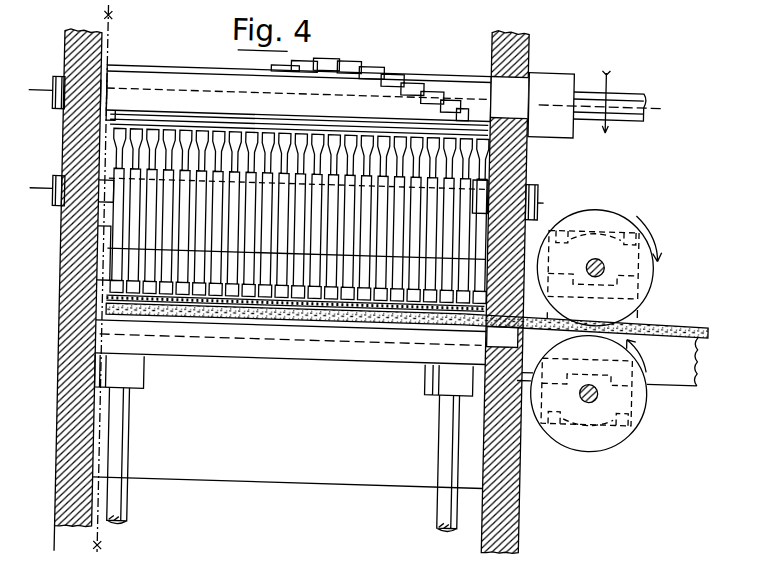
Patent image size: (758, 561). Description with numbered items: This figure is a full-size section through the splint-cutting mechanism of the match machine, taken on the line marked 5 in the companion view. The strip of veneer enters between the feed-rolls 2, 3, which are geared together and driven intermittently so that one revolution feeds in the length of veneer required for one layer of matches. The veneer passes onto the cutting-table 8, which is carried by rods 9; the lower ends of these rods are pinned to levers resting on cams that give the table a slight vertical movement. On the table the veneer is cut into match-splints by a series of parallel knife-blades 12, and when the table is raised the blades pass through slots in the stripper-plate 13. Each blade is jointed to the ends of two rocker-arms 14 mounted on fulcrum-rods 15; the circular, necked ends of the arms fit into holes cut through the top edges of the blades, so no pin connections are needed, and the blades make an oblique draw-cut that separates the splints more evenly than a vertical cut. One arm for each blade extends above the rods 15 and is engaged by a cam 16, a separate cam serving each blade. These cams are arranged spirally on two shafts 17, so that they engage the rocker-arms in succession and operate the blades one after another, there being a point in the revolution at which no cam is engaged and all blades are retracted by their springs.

The feed-roll 2 is at (566, 208).
The feed-roll 3 is at (650, 384).
The gear 5 is at (110, 276).
The cutting-table 8 is at (412, 332).
The rods 9 is at (150, 432).
The knife-blades 12 is at (115, 280).
The stripper-plate 13 is at (112, 308).
The rocker-arms 14 is at (102, 232).
The rods 15 is at (56, 185).
The cam 16 is at (352, 58).
The shafts 17 is at (615, 73).